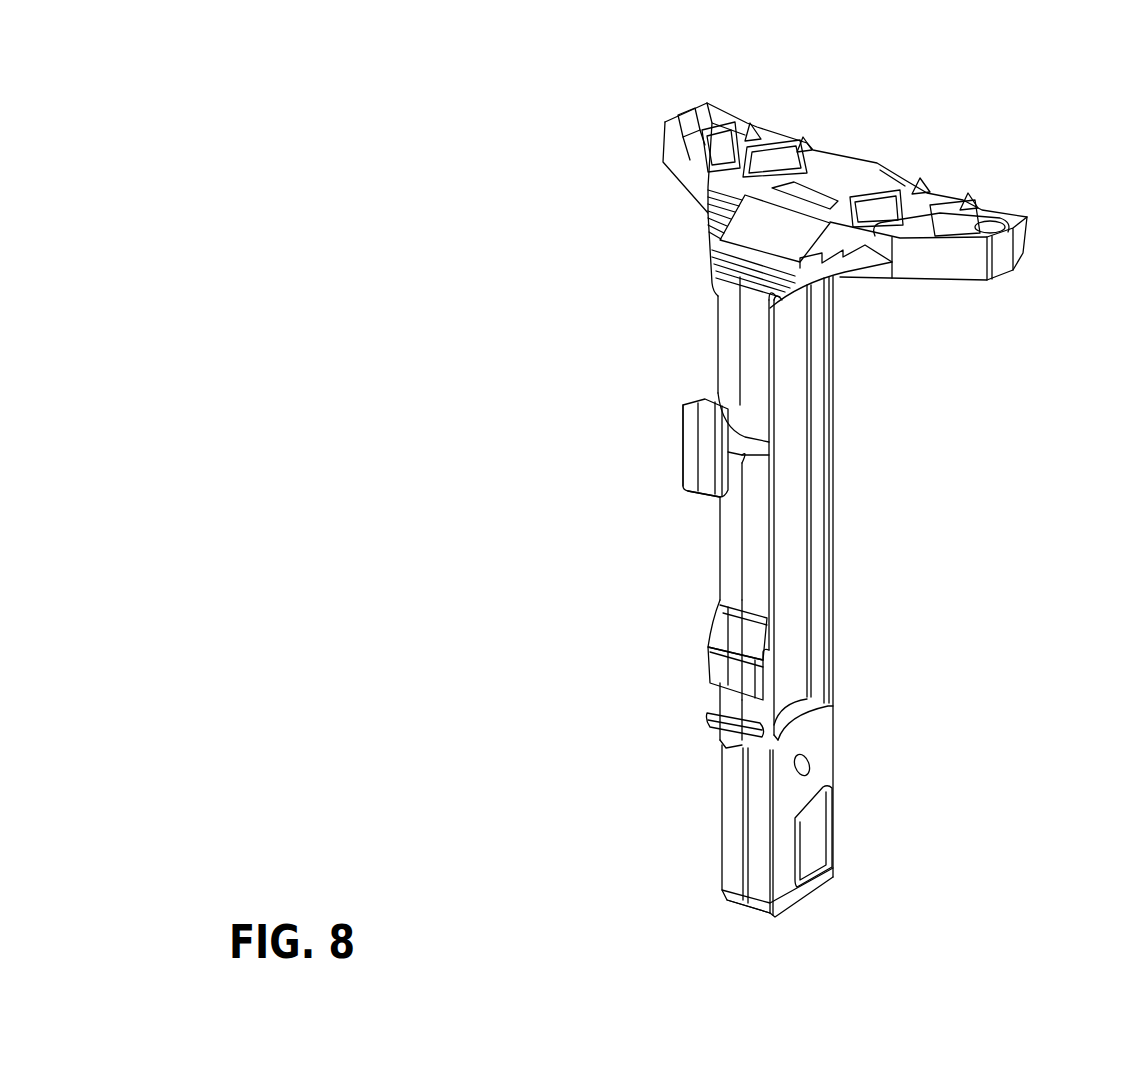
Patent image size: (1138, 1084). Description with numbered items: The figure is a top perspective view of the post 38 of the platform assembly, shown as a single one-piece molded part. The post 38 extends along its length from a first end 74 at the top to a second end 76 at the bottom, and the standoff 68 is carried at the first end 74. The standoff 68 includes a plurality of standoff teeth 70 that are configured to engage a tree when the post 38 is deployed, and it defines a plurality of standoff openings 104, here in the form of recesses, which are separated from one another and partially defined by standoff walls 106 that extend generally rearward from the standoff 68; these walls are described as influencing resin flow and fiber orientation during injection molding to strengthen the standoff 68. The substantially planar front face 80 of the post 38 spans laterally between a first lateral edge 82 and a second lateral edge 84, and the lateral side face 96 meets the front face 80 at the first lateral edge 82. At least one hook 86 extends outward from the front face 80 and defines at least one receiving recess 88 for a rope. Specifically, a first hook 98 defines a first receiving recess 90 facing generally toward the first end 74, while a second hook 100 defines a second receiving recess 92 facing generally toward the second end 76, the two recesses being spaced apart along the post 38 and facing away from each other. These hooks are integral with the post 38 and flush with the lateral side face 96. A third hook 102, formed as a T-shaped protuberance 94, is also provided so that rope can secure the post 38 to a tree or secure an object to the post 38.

The post 38 is at (840, 618).
The standoff 68 is at (988, 262).
The standoff teeth 70 is at (743, 130).
The first end 74 is at (740, 278).
The second end 76 is at (797, 907).
The front face 80 is at (732, 572).
The first lateral edge 82 is at (782, 577).
The second lateral edge 84 is at (714, 595).
The hook 86 is at (688, 441).
The receiving recess 88 is at (735, 404).
The first receiving recess 90 is at (778, 727).
The second receiving recess 92 is at (777, 667).
The T-shaped protuberance 94 is at (688, 477).
The lateral side face 96 is at (812, 738).
The first hook 98 is at (717, 733).
The second hook 100 is at (722, 678).
The third hook 102 is at (688, 423).
The standoff openings 104 is at (714, 150).
The standoff walls 106 is at (680, 115).